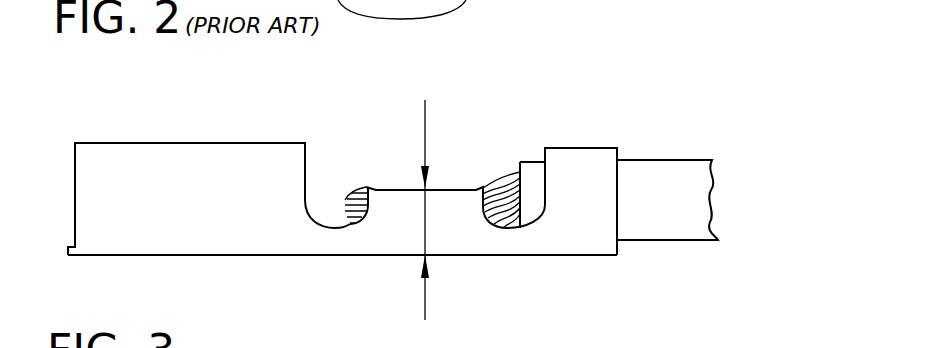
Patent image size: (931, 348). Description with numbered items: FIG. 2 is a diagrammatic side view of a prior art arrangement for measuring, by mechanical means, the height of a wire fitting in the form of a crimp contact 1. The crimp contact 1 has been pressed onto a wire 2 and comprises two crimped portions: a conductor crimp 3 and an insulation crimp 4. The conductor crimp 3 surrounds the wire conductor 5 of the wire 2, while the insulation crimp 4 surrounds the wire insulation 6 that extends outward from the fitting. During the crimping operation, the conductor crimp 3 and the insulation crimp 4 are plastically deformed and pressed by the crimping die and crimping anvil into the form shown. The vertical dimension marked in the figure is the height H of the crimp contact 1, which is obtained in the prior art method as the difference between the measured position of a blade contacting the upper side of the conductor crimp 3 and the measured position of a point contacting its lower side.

The crimp contact 1 is at (147, 173).
The wire 2 is at (683, 266).
The conductor crimp 3 is at (452, 210).
The insulation crimp 4 is at (575, 170).
The wire conductor 5 is at (349, 200).
The wire insulation 6 is at (662, 187).
The height of the crimp contact H is at (425, 217).